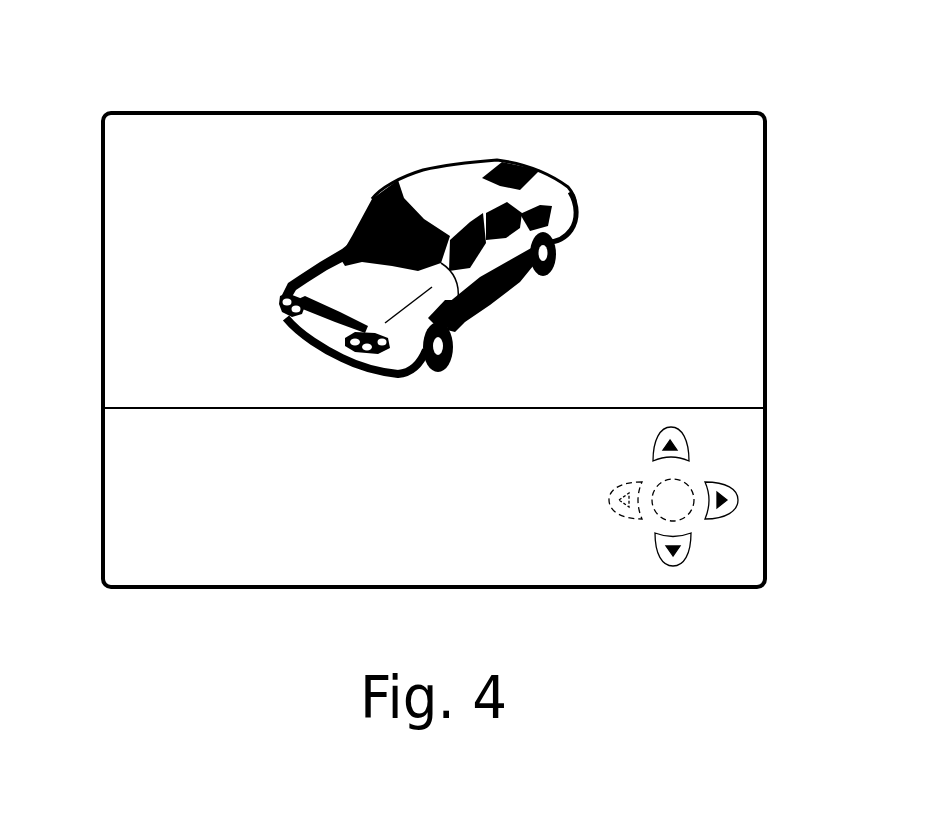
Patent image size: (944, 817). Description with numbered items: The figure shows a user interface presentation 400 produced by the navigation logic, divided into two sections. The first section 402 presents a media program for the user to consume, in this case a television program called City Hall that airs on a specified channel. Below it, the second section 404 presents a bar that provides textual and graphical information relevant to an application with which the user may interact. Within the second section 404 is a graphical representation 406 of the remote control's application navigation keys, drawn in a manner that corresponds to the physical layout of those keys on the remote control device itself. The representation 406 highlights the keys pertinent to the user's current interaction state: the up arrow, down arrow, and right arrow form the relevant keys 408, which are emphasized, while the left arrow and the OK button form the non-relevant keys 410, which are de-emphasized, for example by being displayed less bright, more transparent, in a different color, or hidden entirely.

The user interface presentation 400 is at (172, 44).
The first section 402 is at (93, 118).
The second section 404 is at (93, 427).
The graphical representation 406 is at (748, 600).
The relevant keys 408 is at (673, 532).
The non-relevant keys 410 is at (650, 517).